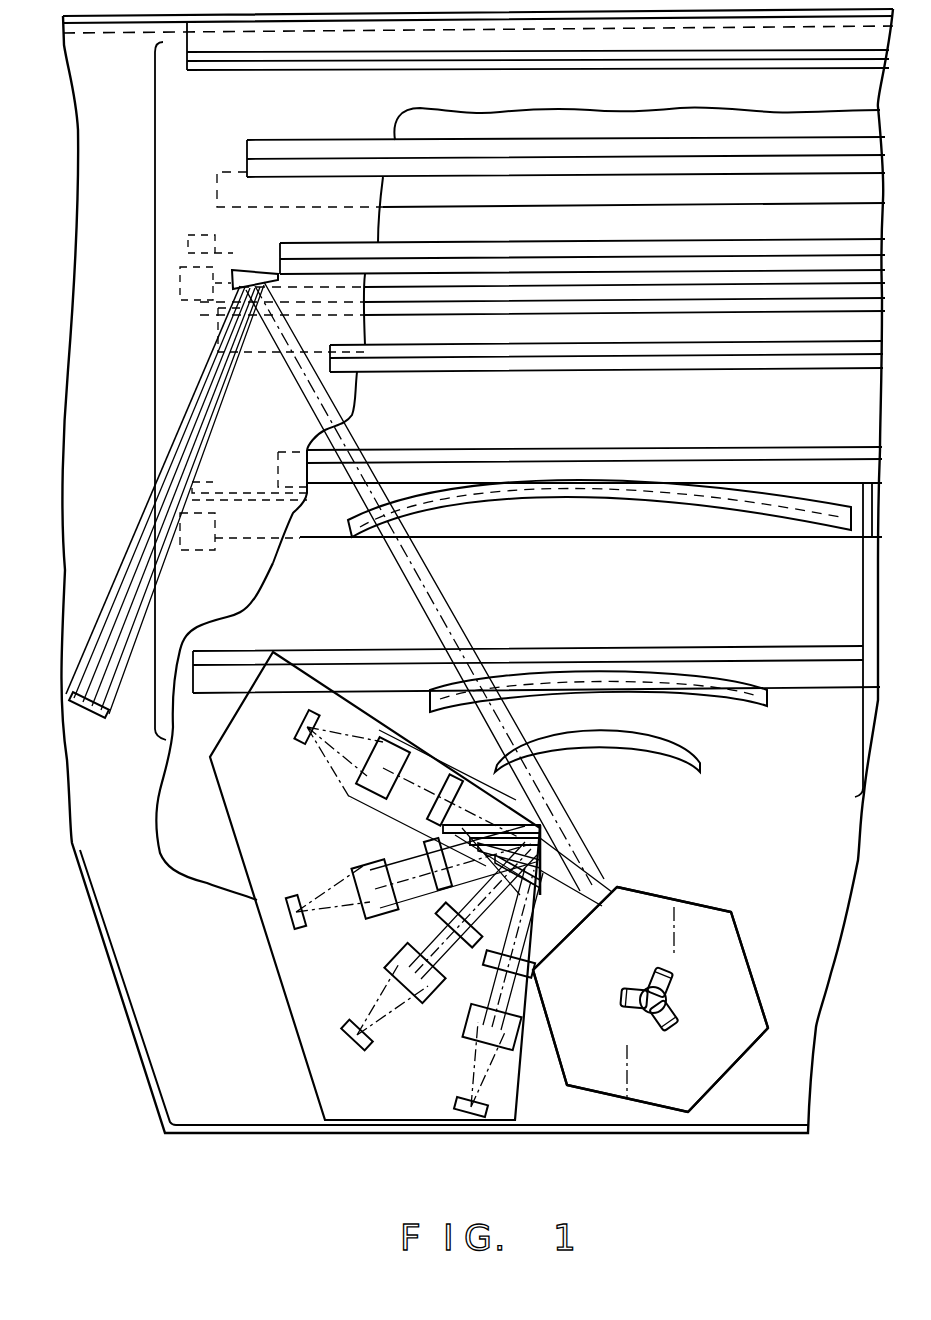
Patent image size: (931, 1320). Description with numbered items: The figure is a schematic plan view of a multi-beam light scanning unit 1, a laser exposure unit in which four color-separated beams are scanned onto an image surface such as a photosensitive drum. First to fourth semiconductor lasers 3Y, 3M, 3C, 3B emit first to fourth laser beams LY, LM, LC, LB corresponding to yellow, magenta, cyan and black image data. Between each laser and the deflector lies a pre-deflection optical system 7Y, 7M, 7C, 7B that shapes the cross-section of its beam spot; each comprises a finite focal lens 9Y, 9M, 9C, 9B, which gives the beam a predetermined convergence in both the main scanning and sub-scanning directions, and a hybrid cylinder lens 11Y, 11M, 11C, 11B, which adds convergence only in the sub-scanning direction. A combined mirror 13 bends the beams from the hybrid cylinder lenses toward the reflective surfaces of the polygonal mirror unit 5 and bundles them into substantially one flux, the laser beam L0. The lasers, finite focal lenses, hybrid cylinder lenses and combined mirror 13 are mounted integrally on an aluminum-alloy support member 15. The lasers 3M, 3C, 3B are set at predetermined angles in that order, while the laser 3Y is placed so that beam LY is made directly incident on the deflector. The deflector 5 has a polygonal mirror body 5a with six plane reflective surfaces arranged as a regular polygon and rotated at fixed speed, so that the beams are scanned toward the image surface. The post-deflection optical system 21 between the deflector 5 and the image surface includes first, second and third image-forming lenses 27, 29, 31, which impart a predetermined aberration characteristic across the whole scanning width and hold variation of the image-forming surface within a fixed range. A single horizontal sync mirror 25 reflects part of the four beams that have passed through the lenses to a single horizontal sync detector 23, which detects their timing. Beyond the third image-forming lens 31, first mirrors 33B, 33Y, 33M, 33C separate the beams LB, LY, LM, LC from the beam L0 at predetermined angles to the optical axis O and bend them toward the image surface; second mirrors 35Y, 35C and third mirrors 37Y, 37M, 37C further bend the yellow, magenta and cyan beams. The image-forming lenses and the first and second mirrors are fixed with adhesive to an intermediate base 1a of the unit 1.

The multi-beam light scanning unit 1 is at (139, 1074).
The intermediate base 1a is at (180, 874).
The first semiconductor laser 3Y is at (298, 718).
The second semiconductor laser 3M is at (291, 903).
The third semiconductor laser 3C is at (352, 1042).
The fourth semiconductor laser 3B is at (456, 1108).
The polygonal mirror unit 5 is at (753, 914).
The polygonal mirror body 5a is at (666, 1000).
The pre-deflection optical system 7Y is at (386, 818).
The pre-deflection optical system 7M is at (418, 896).
The pre-deflection optical system 7C is at (452, 962).
The pre-deflection optical system 7B is at (519, 996).
The finite focal lens 9Y is at (392, 755).
The finite focal lens 9M is at (368, 880).
The finite focal lens 9C is at (392, 968).
The finite focal lens 9B is at (482, 1040).
The hybrid cylinder lens 11Y is at (440, 778).
The hybrid cylinder lens 11M is at (420, 858).
The hybrid cylinder lens 11C is at (440, 932).
The hybrid cylinder lens 11B is at (486, 980).
The combined mirror 13 is at (492, 826).
The support member 15 is at (306, 1040).
The post-deflection optical system 21 is at (148, 388).
The horizontal sync detector 23 is at (86, 712).
The horizontal sync mirror 25 is at (243, 268).
The first image-forming lens 27 is at (683, 766).
The second image-forming lens 29 is at (752, 700).
The third image-forming lens 31 is at (768, 512).
The first mirror 33B is at (771, 37).
The first mirror 33C is at (662, 150).
The first mirror 33M is at (770, 254).
The first mirror 33Y is at (672, 370).
The second mirror 35C is at (476, 196).
The second mirror 35Y is at (815, 455).
The third mirror 37C is at (268, 257).
The third mirror 37M is at (333, 545).
The third mirror 37Y is at (792, 647).
The fourth laser beam LB is at (78, 595).
The third laser beam LC is at (95, 620).
The second laser beam LM is at (98, 650).
The first laser beam LY is at (98, 684).
The bundled laser beam L0 is at (417, 606).
The optical axis O is at (592, 866).
The beam direction P is at (434, 828).